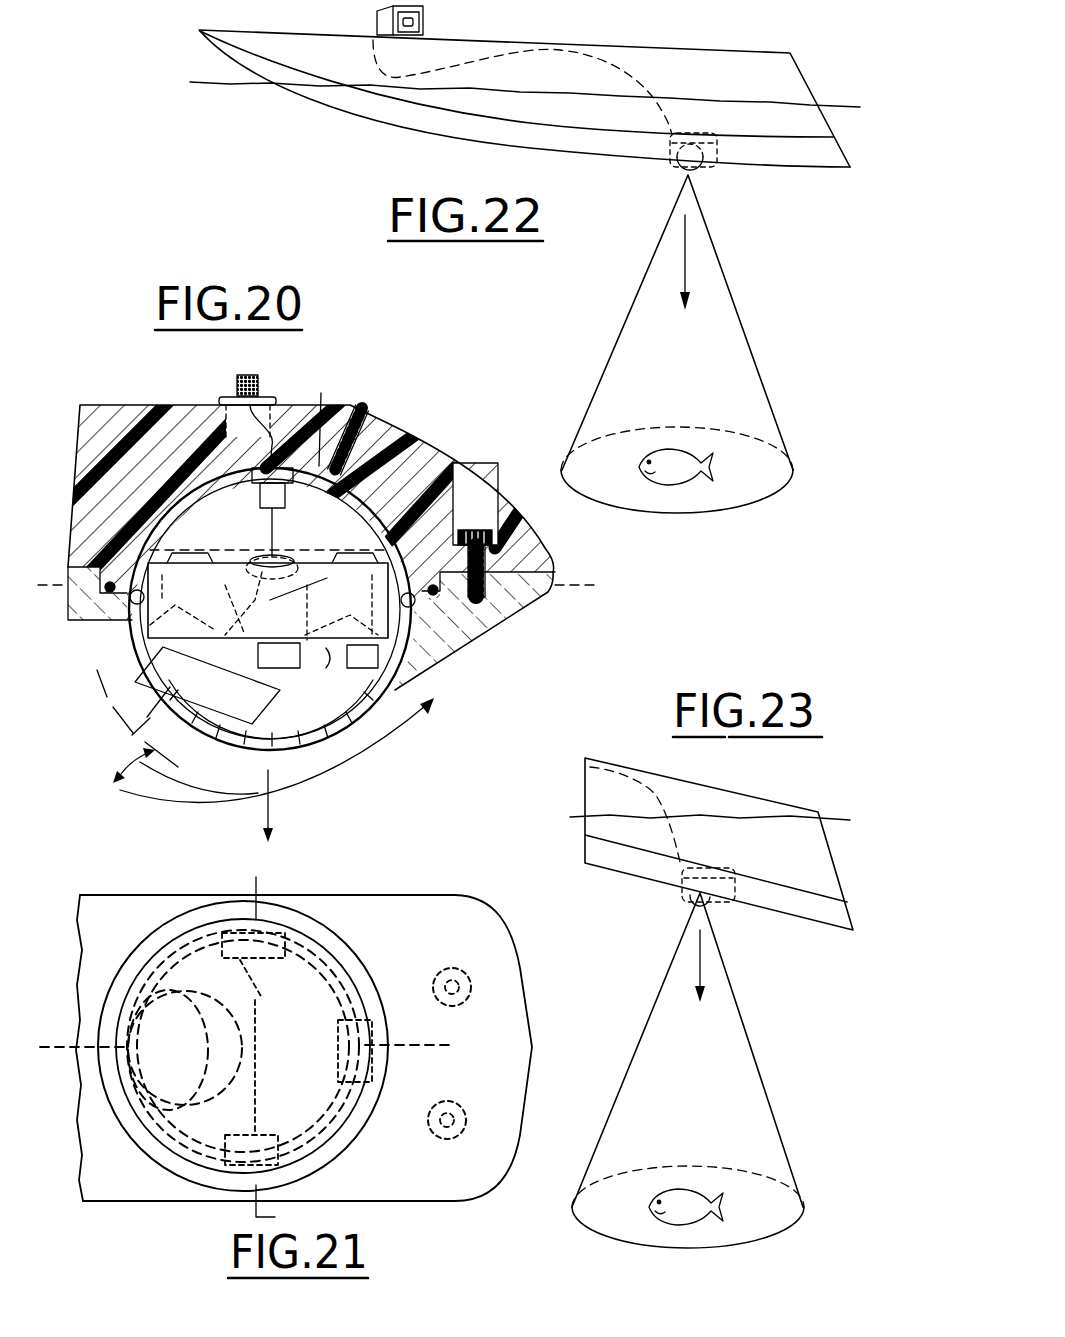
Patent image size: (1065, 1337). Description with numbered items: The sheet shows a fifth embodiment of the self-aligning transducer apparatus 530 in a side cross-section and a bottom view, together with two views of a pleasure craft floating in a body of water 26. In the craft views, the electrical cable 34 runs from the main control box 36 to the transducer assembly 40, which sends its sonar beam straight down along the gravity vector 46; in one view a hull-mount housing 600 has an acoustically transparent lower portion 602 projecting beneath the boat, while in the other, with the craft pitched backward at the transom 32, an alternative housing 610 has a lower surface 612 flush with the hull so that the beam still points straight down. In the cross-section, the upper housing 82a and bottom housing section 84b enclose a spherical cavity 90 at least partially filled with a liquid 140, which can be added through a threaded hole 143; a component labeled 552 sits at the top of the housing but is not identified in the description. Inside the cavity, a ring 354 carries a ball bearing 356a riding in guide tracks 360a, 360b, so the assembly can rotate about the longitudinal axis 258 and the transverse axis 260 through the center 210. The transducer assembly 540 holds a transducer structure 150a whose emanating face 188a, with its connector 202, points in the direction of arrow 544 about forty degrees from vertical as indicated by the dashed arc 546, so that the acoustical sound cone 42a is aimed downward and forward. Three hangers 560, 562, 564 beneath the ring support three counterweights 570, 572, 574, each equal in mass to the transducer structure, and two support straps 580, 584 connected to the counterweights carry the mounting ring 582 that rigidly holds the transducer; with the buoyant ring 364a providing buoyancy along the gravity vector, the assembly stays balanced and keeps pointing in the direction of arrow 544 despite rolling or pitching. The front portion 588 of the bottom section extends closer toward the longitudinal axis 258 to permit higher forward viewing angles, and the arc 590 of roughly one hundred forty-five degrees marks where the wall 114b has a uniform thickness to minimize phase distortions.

In FIG. 22, the body of water 26 is at (214, 62).
In FIG. 23, the body of water 26 is at (571, 818).
In FIG. 22, the transom 32 is at (812, 102).
In FIG. 23, the transom 32 is at (822, 816).
In FIG. 22, the electrical cable 34 is at (556, 51).
In FIG. 23, the electrical cable 34 is at (673, 783).
In FIG. 22, the main control box 36 is at (428, 24).
In FIG. 23, the electro-acoustical transducer assembly 40 is at (722, 908).
In FIG. 22, the housing 600 is at (703, 135).
In FIG. 22, the lower portion 602 is at (703, 170).
In FIG. 23, the alternative housing 610 is at (716, 870).
In FIG. 23, the lower surface 612 is at (689, 896).
In FIG. 20, the upper housing 82a is at (433, 441).
In FIG. 20, the bottom housing section 84b is at (490, 613).
In FIG. 20, the cavity 90 is at (321, 418).
In FIG. 20, the wall 114b is at (322, 742).
In FIG. 20, the liquid 140 is at (292, 545).
In FIG. 20, the threaded hole 143 is at (346, 410).
In FIG. 20, the transducer structure 150a is at (243, 708).
In FIG. 20, the emanating face 188a is at (125, 707).
In FIG. 20, the BNC receptacle 202 is at (269, 595).
In FIG. 21, the center 210 is at (255, 1050).
In FIG. 20, the first axis 258 is at (78, 630).
In FIG. 21, the first axis 258 is at (82, 1030).
In FIG. 20, the second axis 260 is at (322, 583).
In FIG. 21, the second axis 260 is at (262, 880).
In FIG. 20, the first support frame 354 is at (440, 648).
In FIG. 20, the ball bearing 356a is at (145, 591).
In FIG. 20, the guide track 360a is at (167, 405).
In FIG. 20, the guide track 360b is at (447, 458).
In FIG. 20, the buoyant ring 364a is at (198, 553).
In FIG. 20, the transducer apparatus 530 is at (560, 537).
In FIG. 20, the transducer assembly 540 is at (318, 668).
In FIG. 20, the arrow 544 is at (116, 757).
In FIG. 20, the dashed arc 546 is at (252, 811).
In FIG. 20, the cable gland 552 is at (197, 498).
In FIG. 21, the hanger 560 is at (326, 929).
In FIG. 21, the hanger 562 is at (378, 1030).
In FIG. 21, the hanger 564 is at (292, 1175).
In FIG. 21, the counterweight 570 is at (250, 962).
In FIG. 21, the counterweight 572 is at (380, 1069).
In FIG. 21, the counterweight 574 is at (272, 1137).
In FIG. 21, the support strap 580 is at (266, 1000).
In FIG. 21, the mounting ring 582 is at (262, 1032).
In FIG. 21, the support strap 584 is at (243, 1046).
In FIG. 20, the front portion 588 is at (130, 663).
In FIG. 20, the arc 590 is at (364, 796).
In FIG. 20, the acoustical sound cone 42a is at (155, 727).
In FIG. 20, the gravity vector 46 is at (273, 808).